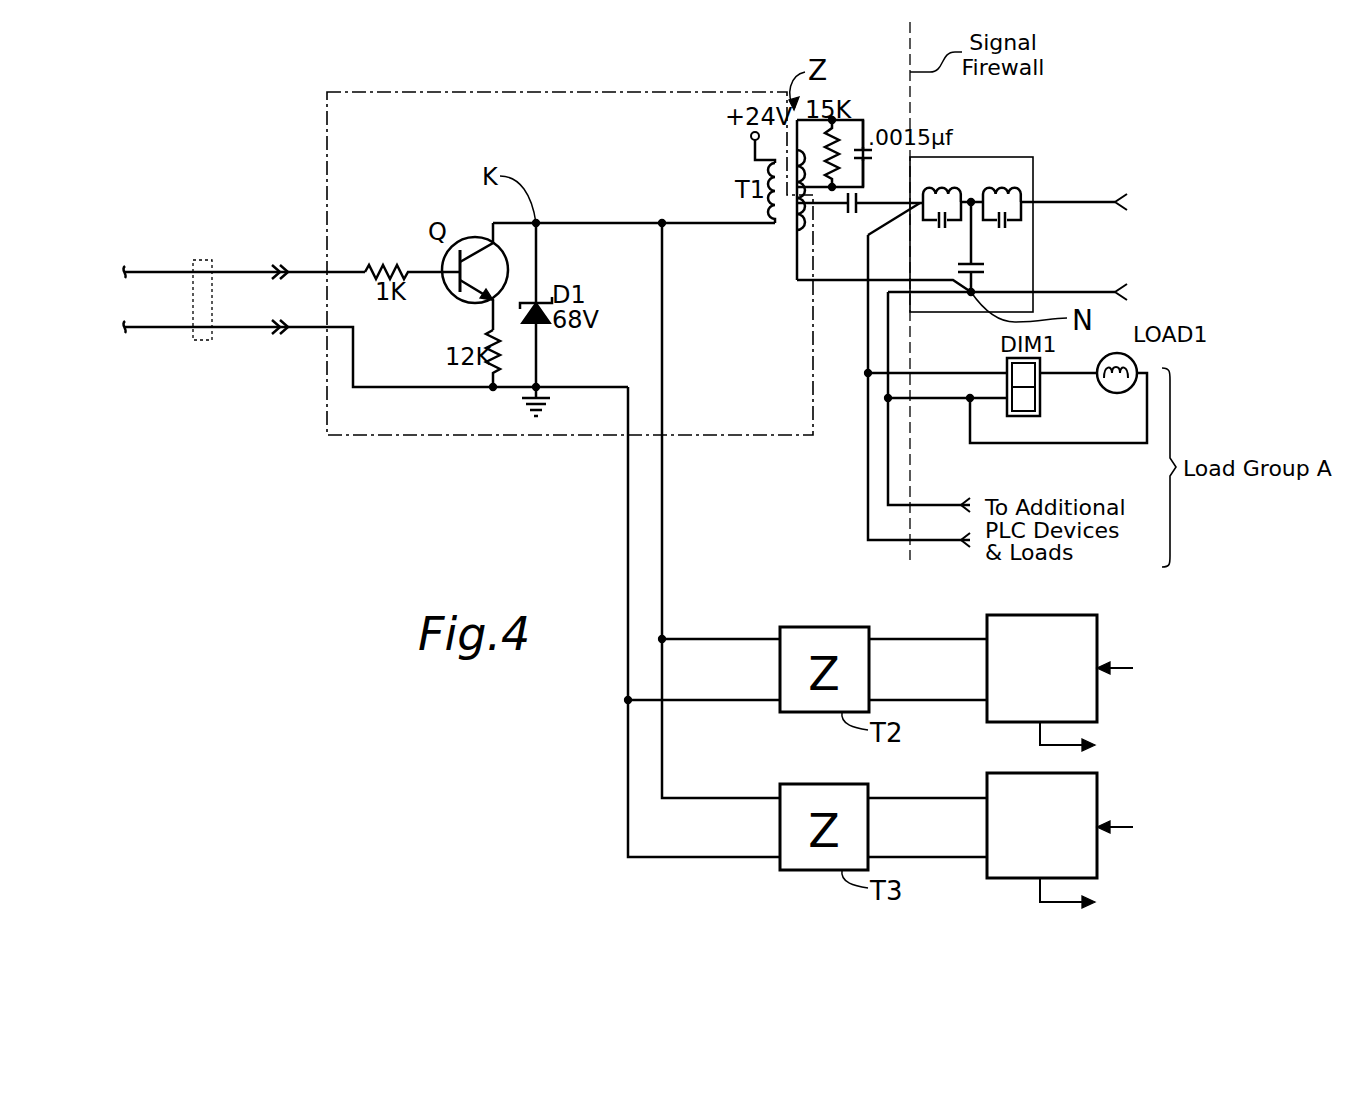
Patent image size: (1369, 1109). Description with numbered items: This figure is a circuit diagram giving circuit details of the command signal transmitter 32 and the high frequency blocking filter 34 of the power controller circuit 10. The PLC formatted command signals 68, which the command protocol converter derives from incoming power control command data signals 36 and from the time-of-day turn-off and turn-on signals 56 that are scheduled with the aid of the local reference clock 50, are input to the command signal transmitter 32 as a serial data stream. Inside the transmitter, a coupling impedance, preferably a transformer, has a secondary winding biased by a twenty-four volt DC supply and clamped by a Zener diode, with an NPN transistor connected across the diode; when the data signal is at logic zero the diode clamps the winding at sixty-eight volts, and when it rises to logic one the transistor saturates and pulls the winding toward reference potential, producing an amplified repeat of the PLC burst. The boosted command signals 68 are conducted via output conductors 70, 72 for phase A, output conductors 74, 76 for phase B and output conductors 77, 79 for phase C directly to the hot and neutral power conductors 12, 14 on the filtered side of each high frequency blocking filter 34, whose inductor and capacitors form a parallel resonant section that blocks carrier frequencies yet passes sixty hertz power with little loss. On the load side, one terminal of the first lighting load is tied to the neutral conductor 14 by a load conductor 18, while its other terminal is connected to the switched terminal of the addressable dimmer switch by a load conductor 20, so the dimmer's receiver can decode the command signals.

The power controller circuit 10 is at (1148, 102).
The hot power line conductor 12 is at (1085, 200).
The neutral power line conductor 14 is at (1085, 290).
The load conductor 18 is at (1060, 443).
The load conductor 20 is at (1060, 376).
The command signal transmitter 32 is at (400, 92).
The high frequency blocking filter 34 is at (928, 373).
The power control command data signals 36 is at (930, 400).
The local reference clock 50 is at (977, 157).
The time-of-day power turn-off and turn-on signals 56 is at (505, 435).
The PLC formatted command signals 68 is at (202, 260).
The output conductor 70 is at (878, 200).
The output conductor 72 is at (830, 283).
The output conductor 74 is at (907, 639).
The output conductor 76 is at (907, 700).
The output conductor 77 is at (907, 798).
The output conductor 79 is at (907, 857).